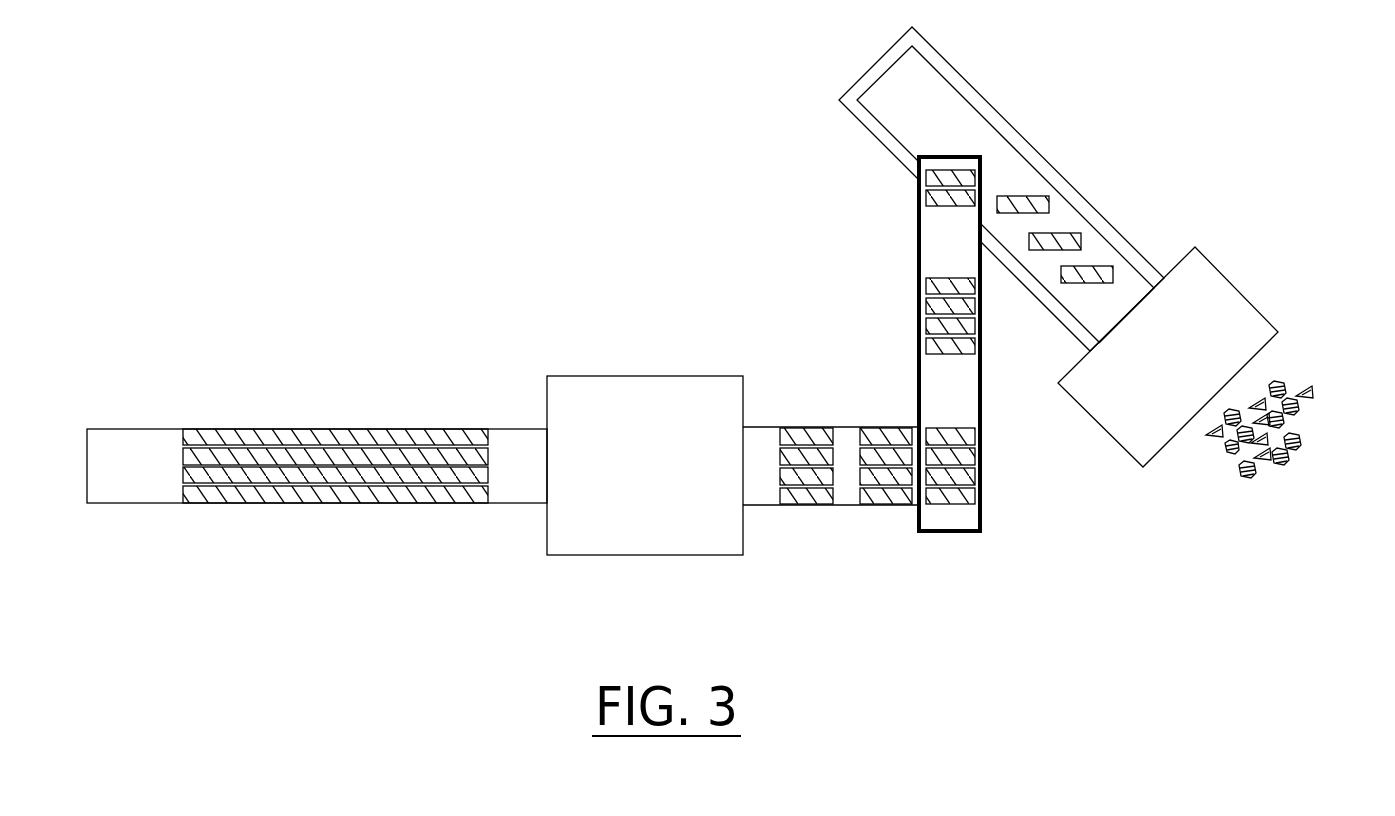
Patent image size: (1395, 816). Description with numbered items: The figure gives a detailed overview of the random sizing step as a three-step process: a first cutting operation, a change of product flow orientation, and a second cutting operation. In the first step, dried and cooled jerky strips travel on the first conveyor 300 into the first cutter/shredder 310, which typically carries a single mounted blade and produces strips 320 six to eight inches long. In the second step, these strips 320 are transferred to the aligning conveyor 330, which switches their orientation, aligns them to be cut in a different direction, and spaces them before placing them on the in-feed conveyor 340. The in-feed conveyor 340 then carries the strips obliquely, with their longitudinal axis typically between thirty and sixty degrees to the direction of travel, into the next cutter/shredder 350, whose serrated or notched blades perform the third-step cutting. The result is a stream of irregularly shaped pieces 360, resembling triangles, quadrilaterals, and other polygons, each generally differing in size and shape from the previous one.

The first conveyor 300 is at (183, 452).
The first cutter/shredder 310 is at (658, 375).
The strips 320 is at (856, 427).
The aligning conveyor 330 is at (917, 238).
The in-feed conveyor 340 is at (1083, 216).
The next cutter/shredder 350 is at (1237, 289).
The irregularly shaped pieces 360 is at (1300, 392).